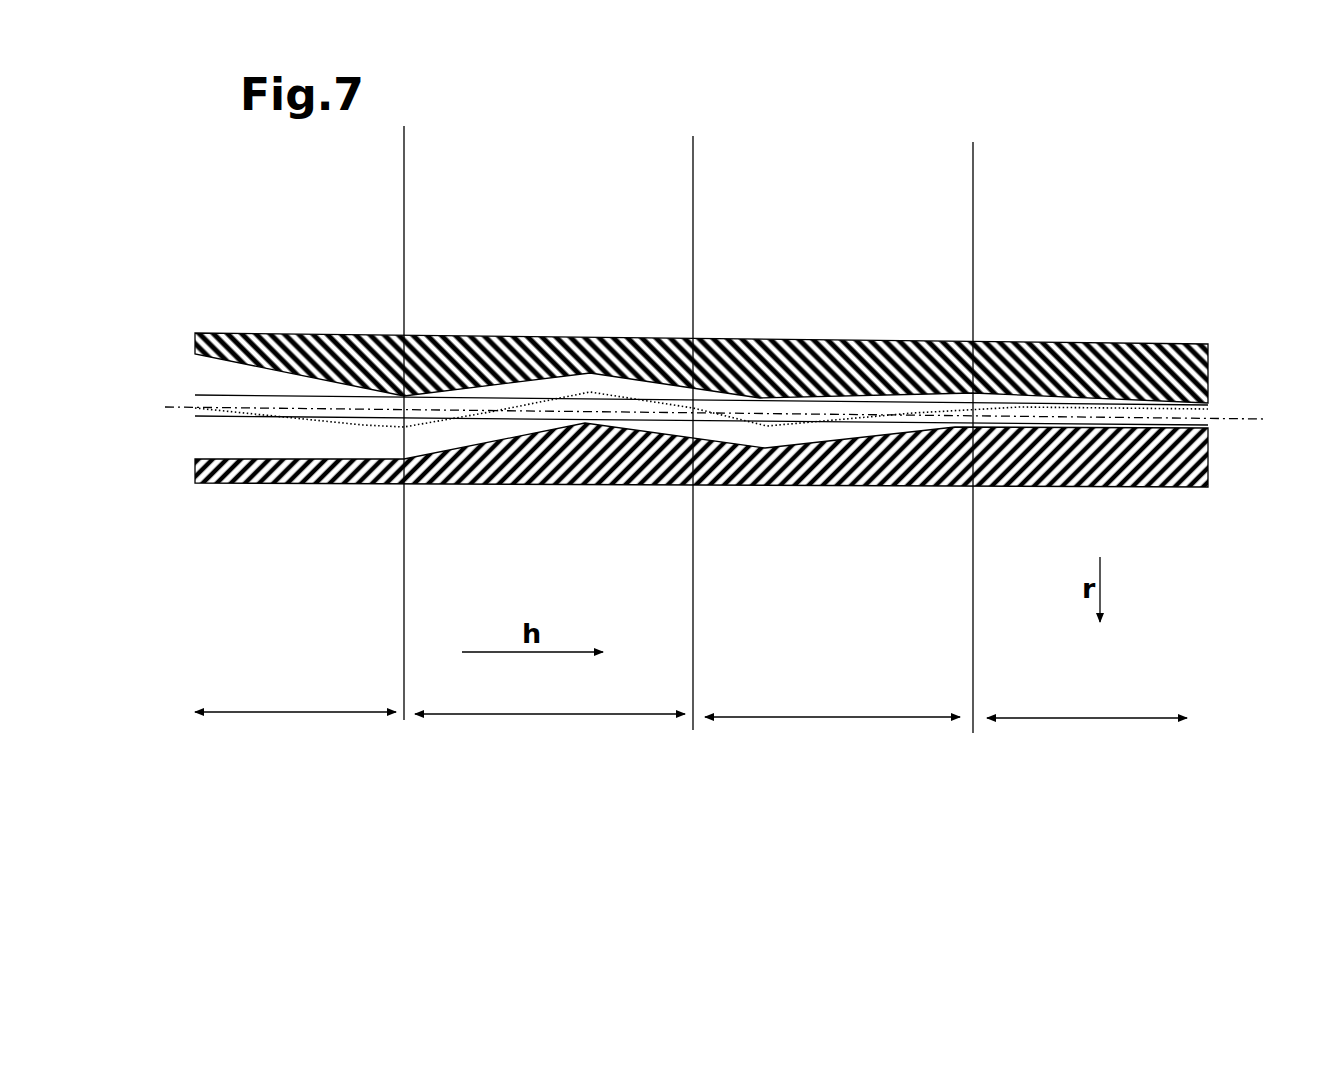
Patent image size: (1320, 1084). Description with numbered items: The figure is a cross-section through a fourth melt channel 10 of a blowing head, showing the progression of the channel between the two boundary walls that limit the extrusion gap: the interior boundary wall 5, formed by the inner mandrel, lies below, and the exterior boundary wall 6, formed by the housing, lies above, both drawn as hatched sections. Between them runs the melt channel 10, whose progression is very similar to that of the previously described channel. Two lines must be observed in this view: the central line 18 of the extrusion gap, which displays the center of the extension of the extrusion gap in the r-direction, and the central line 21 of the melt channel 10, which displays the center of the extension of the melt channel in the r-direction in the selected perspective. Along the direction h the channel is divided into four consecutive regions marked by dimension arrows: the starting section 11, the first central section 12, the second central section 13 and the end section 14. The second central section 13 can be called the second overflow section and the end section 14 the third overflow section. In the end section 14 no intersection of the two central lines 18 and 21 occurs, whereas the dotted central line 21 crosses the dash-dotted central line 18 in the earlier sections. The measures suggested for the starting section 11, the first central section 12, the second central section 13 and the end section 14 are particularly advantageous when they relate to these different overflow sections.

The interior boundary wall 5 is at (368, 472).
The exterior boundary wall 6 is at (358, 335).
The melt channel 10 is at (797, 400).
The central line of the extrusion gap 18 is at (716, 415).
The central line of the melt channel 21 is at (363, 425).
The starting section 11 is at (295, 732).
The first central section 12 is at (550, 732).
The second central section 13 is at (832, 736).
The end section 14 is at (1087, 739).